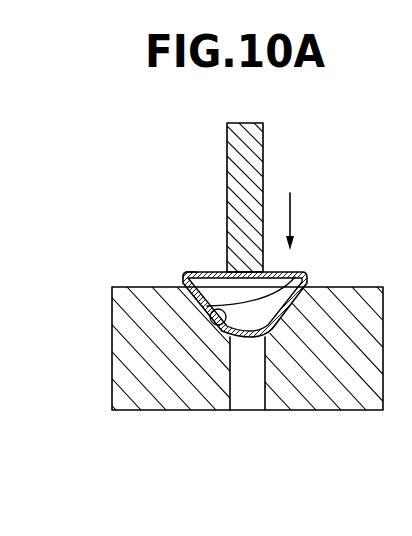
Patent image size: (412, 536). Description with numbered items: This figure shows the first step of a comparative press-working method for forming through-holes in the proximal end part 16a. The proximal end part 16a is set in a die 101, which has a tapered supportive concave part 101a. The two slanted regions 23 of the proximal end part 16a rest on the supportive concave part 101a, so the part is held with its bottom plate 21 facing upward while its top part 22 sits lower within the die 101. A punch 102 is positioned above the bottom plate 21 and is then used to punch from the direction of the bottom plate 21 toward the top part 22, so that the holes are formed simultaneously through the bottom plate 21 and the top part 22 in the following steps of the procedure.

The punch 102 is at (237, 156).
The die 101 is at (177, 420).
The tapered supportive concave part 101a is at (211, 316).
The top part 22 is at (231, 337).
The bottom plate 21 is at (213, 268).
The proximal end part 16a is at (186, 260).
The slanted region 23 is at (295, 277).